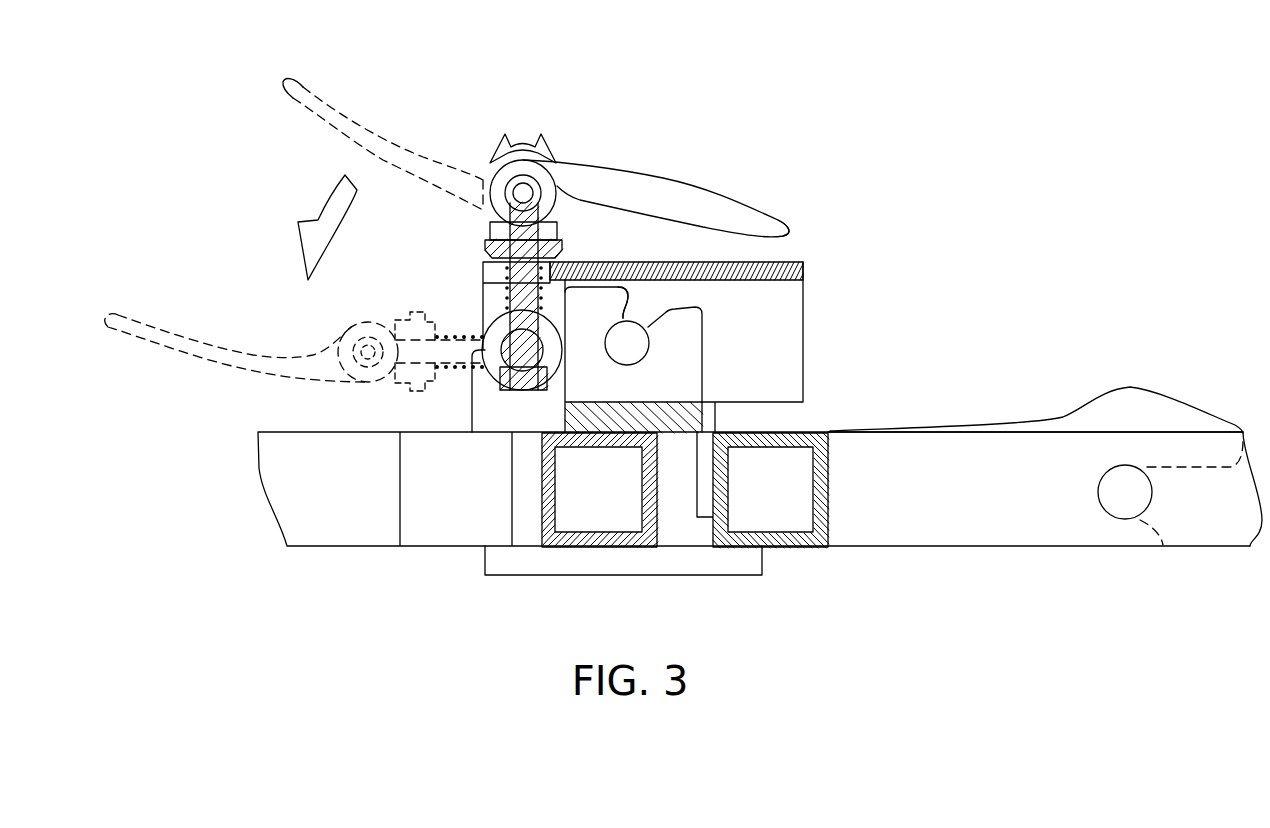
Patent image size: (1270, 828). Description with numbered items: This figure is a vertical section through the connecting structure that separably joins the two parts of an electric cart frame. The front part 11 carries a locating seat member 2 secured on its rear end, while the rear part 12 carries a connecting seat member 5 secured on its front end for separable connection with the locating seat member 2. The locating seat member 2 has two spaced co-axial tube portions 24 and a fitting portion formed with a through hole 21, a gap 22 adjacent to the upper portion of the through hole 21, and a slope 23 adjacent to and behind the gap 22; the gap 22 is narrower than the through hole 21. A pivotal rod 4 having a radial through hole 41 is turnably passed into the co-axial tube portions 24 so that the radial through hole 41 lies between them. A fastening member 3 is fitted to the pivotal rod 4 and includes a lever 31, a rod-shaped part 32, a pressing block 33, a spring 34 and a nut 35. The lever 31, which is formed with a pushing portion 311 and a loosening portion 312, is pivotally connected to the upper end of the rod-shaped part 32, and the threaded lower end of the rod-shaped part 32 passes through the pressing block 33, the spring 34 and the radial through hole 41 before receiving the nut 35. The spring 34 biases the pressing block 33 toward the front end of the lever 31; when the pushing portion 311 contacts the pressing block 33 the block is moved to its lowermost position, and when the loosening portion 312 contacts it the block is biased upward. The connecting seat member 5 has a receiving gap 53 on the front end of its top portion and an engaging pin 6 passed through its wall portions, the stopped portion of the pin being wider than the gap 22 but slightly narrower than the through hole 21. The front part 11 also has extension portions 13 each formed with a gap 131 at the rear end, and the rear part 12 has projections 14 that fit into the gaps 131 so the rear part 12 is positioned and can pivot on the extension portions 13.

The locating seat member 2 is at (687, 382).
The through hole 21 is at (627, 365).
The gap 22 is at (635, 318).
The slope 23 is at (668, 300).
The co-axial tube portions 24 is at (483, 315).
The fastening member 3 is at (628, 167).
The lever 31 is at (663, 178).
The pushing portion 311 is at (785, 230).
The loosening portion 312 is at (495, 170).
The rod-shaped part 32 is at (483, 298).
The pressing block 33 is at (487, 245).
The spring 34 is at (483, 283).
The nut 35 is at (503, 392).
The pivotal rod 4 is at (480, 365).
The radial through hole 41 is at (497, 360).
The connecting seat member 5 is at (785, 262).
The receiving gap 53 is at (597, 262).
The engaging pin 6 is at (627, 343).
The front part 11 is at (308, 540).
The rear part 12 is at (1233, 546).
The extension portions 13 is at (1113, 407).
The gap 131 is at (1097, 490).
The projections 14 is at (1122, 498).